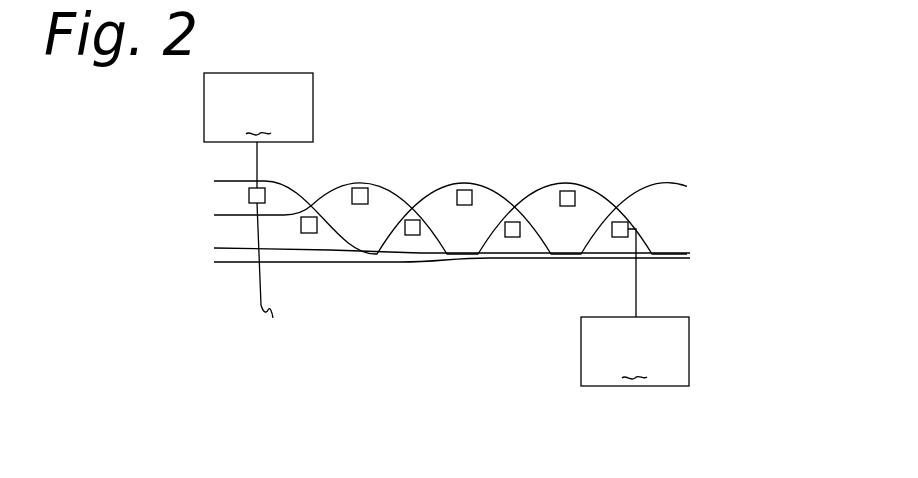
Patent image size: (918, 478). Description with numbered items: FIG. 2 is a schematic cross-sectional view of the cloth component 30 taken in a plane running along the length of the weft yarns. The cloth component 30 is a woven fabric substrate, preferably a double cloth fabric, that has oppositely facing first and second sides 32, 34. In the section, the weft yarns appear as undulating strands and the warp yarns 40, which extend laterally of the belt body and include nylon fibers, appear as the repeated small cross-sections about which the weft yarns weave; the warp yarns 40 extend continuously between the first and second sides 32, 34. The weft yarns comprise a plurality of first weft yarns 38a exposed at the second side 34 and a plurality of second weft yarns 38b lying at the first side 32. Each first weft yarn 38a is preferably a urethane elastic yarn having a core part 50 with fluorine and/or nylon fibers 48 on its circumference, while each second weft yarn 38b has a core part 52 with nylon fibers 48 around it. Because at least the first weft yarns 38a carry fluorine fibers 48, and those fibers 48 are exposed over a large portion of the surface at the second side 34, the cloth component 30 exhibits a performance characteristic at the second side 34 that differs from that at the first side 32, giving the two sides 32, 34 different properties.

The cloth component 30 is at (698, 195).
The first side 32 is at (677, 267).
The second side 34 is at (625, 165).
The first weft yarns 38a is at (560, 190).
The second weft yarns 38b is at (617, 237).
The warp yarns 40 is at (227, 213).
The fibers 48 is at (446, 229).
The core part 50 is at (270, 244).
The core part 52 is at (628, 223).